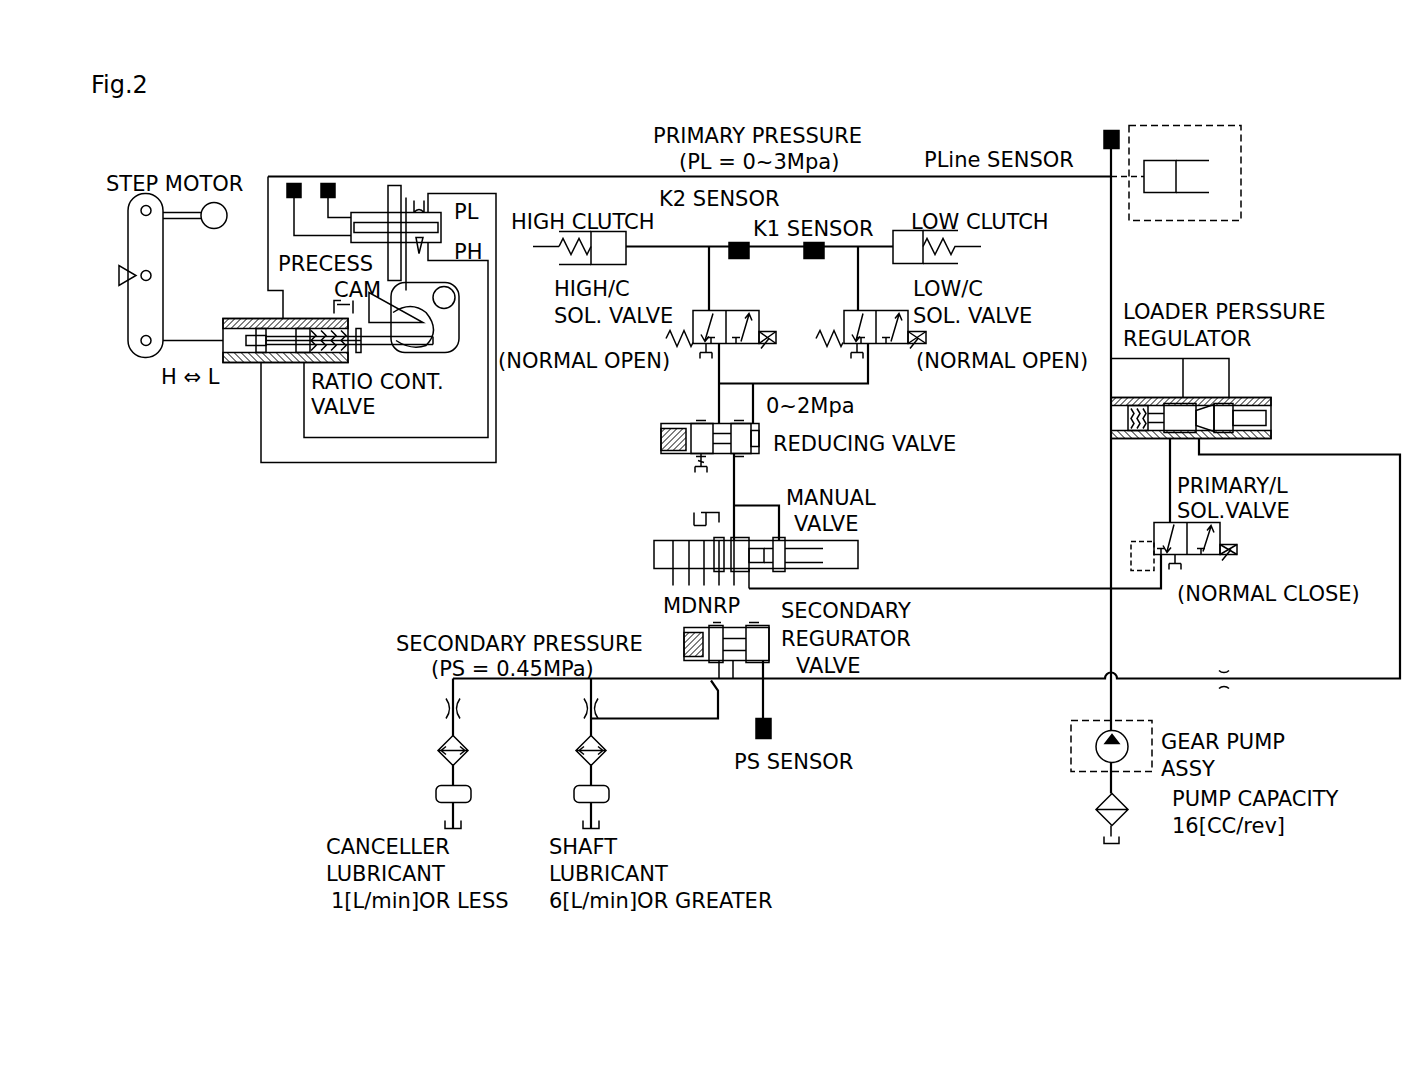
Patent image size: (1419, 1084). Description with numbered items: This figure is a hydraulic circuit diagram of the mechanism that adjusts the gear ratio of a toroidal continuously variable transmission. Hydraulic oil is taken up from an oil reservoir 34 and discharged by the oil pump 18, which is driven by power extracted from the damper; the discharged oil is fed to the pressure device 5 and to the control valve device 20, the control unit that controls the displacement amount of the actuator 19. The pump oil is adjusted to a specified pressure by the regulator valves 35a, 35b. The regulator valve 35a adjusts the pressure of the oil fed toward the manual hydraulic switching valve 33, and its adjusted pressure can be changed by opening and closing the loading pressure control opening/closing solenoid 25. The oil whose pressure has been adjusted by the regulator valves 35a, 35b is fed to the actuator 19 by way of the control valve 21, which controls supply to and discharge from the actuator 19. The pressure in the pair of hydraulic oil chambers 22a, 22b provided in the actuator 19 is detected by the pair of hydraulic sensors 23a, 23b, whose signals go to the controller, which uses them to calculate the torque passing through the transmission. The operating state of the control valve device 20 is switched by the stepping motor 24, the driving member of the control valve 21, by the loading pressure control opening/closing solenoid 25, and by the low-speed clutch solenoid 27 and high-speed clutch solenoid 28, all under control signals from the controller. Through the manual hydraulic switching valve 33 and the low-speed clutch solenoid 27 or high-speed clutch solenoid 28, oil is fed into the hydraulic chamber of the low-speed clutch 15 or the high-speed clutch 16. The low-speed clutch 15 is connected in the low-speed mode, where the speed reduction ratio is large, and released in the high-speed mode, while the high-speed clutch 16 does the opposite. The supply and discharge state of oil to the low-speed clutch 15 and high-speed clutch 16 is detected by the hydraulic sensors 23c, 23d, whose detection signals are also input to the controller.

The control valve device 20 is at (200, 162).
The stepping motor 24 is at (216, 228).
The hydraulic sensor 23a is at (293, 182).
The hydraulic sensor 23b is at (330, 182).
The actuator 19 is at (393, 184).
The hydraulic oil chamber 22b is at (420, 212).
The hydraulic oil chamber 22a is at (418, 254).
The control valve 21 is at (243, 318).
The high-speed clutch 16 is at (540, 248).
The low-speed clutch 15 is at (967, 248).
The hydraulic sensor 23d is at (738, 258).
The hydraulic sensor 23c is at (813, 258).
The pressure device 5 is at (1190, 195).
The high-speed clutch solenoid 28 is at (700, 345).
The low-speed clutch solenoid 27 is at (893, 345).
The regulator valve 35a is at (1285, 385).
The loading pressure control opening/closing solenoid 25 is at (1222, 528).
The manual hydraulic switching valve 33 is at (857, 556).
The regulator valve 35b is at (700, 635).
The oil reservoir 34 is at (445, 820).
The oil pump 18 is at (1095, 746).